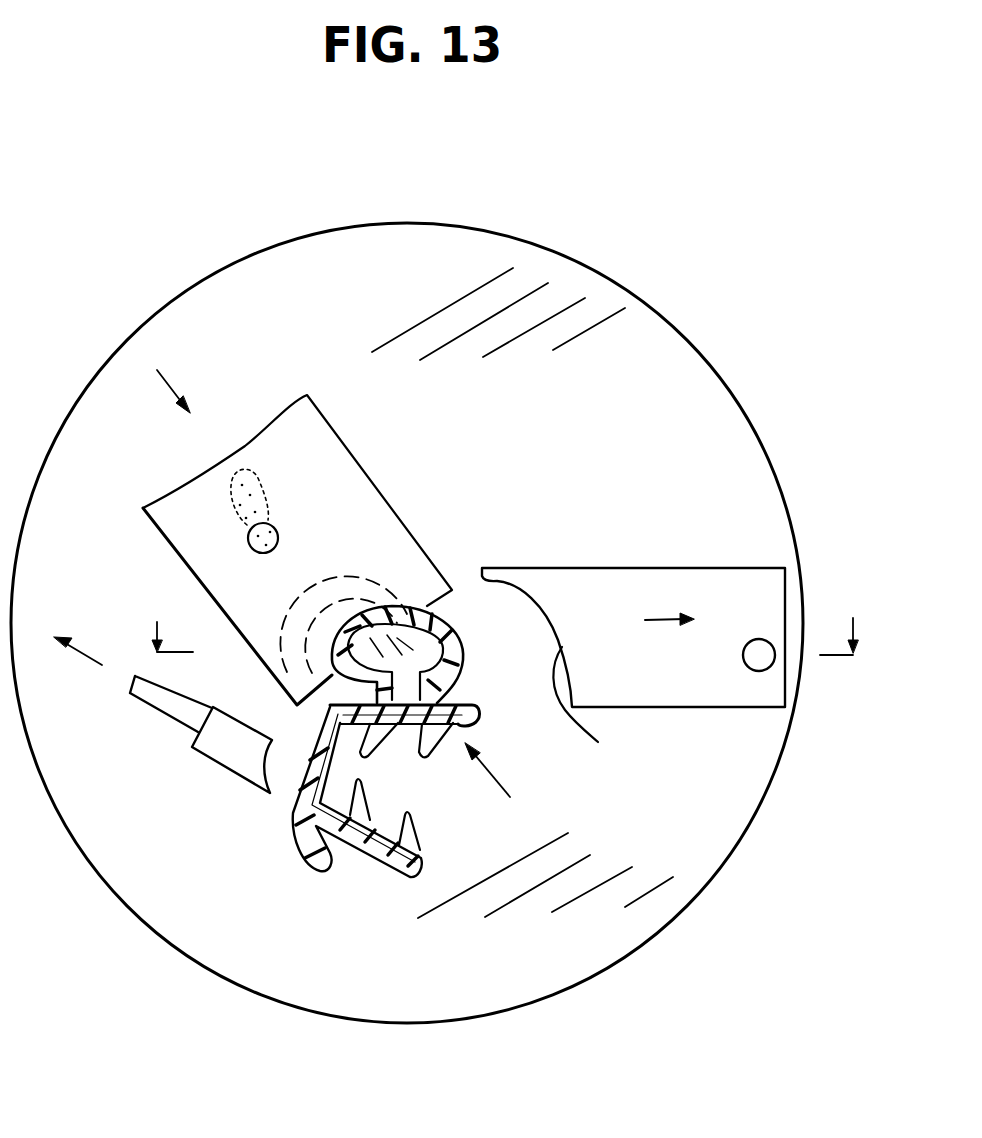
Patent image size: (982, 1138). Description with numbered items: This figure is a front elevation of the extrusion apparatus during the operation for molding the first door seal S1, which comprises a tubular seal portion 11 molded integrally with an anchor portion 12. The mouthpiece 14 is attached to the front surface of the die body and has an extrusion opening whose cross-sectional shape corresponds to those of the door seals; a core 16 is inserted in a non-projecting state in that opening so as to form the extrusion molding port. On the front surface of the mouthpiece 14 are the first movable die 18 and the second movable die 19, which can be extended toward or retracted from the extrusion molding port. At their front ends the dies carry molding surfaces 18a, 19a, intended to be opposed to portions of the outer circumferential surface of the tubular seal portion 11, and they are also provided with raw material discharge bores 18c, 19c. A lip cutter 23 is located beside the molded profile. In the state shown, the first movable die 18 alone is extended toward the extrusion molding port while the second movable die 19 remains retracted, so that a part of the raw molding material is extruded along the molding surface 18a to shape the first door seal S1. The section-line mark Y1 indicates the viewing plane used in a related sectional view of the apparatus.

The tubular seal portion 11 is at (452, 593).
The anchor portion 12 is at (378, 850).
The mouthpiece 14 is at (660, 908).
The core 16 is at (415, 660).
The first movable die 18 is at (337, 467).
The molding surface 18a is at (333, 637).
The raw material discharge bore 18c is at (270, 533).
The second movable die 19 is at (668, 687).
The molding surface 19a is at (590, 714).
The raw material discharge bore 19c is at (757, 661).
The lip cutter 23 is at (228, 750).
The first door seal S1 is at (500, 788).
The section line Y1 is at (513, 619).